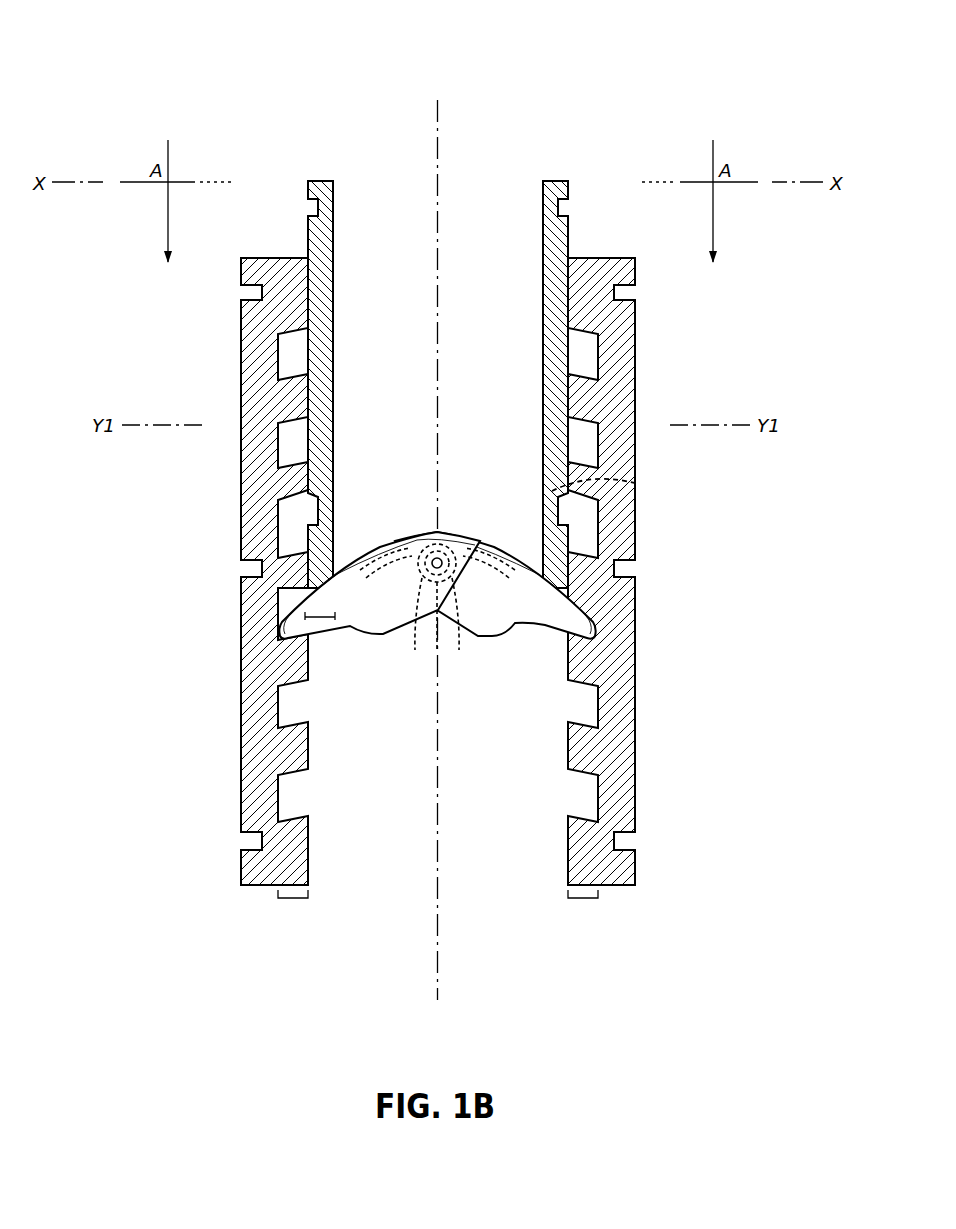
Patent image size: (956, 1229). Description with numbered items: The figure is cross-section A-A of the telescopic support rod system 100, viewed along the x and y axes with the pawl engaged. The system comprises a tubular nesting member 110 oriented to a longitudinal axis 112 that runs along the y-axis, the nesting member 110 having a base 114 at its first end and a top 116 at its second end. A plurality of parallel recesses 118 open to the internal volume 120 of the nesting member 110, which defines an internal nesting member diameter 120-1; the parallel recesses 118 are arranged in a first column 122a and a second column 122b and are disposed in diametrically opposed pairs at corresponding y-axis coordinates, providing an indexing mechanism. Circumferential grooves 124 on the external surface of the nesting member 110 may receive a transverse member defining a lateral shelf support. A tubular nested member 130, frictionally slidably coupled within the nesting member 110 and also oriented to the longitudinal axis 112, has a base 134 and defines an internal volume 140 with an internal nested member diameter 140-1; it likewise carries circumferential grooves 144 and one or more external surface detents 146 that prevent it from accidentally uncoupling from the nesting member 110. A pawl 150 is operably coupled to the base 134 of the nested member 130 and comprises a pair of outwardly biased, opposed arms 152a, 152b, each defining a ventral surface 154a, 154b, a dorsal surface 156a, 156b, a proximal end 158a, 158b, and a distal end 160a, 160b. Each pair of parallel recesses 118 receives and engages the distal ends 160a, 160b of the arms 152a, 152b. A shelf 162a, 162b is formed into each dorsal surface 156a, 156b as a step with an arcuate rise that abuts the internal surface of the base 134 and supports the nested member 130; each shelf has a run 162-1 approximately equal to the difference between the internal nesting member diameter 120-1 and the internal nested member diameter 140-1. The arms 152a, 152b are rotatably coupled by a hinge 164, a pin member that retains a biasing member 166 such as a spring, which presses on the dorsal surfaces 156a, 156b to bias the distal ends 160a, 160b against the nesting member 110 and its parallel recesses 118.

The telescopic support rod system 100 is at (150, 65).
The nesting member 110 is at (248, 880).
The longitudinal axis 112 is at (440, 113).
The base 114 is at (262, 912).
The top 116 is at (643, 260).
The parallel recesses 118 is at (300, 357).
The internal volume 120 is at (350, 814).
The internal nesting member diameter 120-1 is at (565, 857).
The first column 122a is at (295, 898).
The second column 122b is at (583, 898).
The circumferential grooves 124 is at (256, 292).
The nested member 130 is at (322, 180).
The base 134 is at (602, 490).
The internal volume 140 is at (490, 316).
The internal nested member diameter 140-1 is at (539, 288).
The circumferential grooves 144 is at (305, 208).
The external surface detents 146 is at (606, 540).
The pawl 150 is at (449, 579).
The arm 152a is at (387, 609).
The arm 152b is at (512, 609).
The ventral surface 154a is at (388, 644).
The ventral surface 154b is at (492, 644).
The dorsal surface 156a is at (346, 530).
The dorsal surface 156b is at (504, 528).
The proximal end 158a is at (528, 548).
The proximal end 158b is at (405, 541).
The distal end 160a is at (282, 630).
The distal end 160b is at (598, 633).
The shelf 162a is at (314, 598).
The shelf 162b is at (556, 602).
The run 162-1 is at (321, 617).
The hinge 164 is at (435, 557).
The biasing member 166 is at (443, 630).